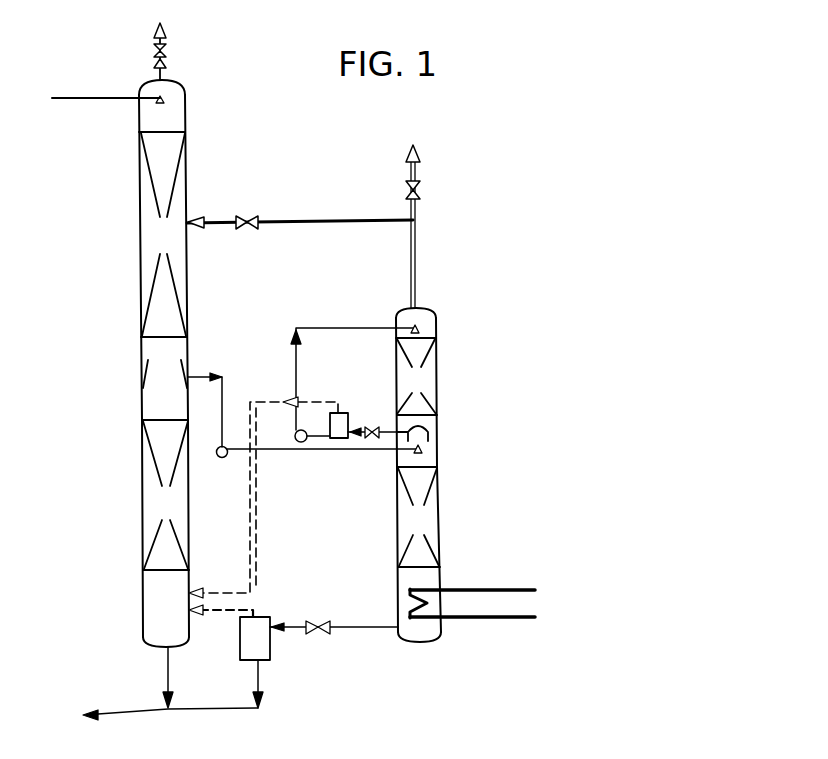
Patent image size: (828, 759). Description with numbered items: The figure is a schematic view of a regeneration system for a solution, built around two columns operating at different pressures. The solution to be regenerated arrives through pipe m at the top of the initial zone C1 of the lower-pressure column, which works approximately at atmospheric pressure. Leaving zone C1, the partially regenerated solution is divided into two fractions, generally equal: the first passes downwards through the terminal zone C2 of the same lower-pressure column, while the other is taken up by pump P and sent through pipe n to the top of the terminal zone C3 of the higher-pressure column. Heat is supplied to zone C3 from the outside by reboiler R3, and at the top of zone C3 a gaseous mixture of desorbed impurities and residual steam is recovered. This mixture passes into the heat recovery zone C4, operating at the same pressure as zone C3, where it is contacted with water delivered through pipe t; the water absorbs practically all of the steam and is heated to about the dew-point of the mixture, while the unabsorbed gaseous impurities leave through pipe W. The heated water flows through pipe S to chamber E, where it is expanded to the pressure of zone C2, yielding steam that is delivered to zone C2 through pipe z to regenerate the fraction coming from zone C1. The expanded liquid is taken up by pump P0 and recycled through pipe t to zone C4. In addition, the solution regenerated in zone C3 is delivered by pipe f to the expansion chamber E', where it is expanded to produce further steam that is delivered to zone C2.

The pipe m is at (106, 86).
The initial zone C1 is at (163, 221).
The terminal zone C2 is at (170, 570).
The terminal zone C3 is at (419, 554).
The heat recovery zone C4 is at (416, 387).
The pipe W is at (423, 226).
The pump P is at (208, 429).
The pump P0 is at (312, 425).
The chamber E is at (345, 418).
The pipe S is at (372, 425).
The pipe t is at (355, 370).
The pipe n is at (324, 456).
The pipe z is at (263, 507).
The expansion chamber E' is at (267, 662).
The pipe f is at (334, 618).
The reboiler R3 is at (472, 592).